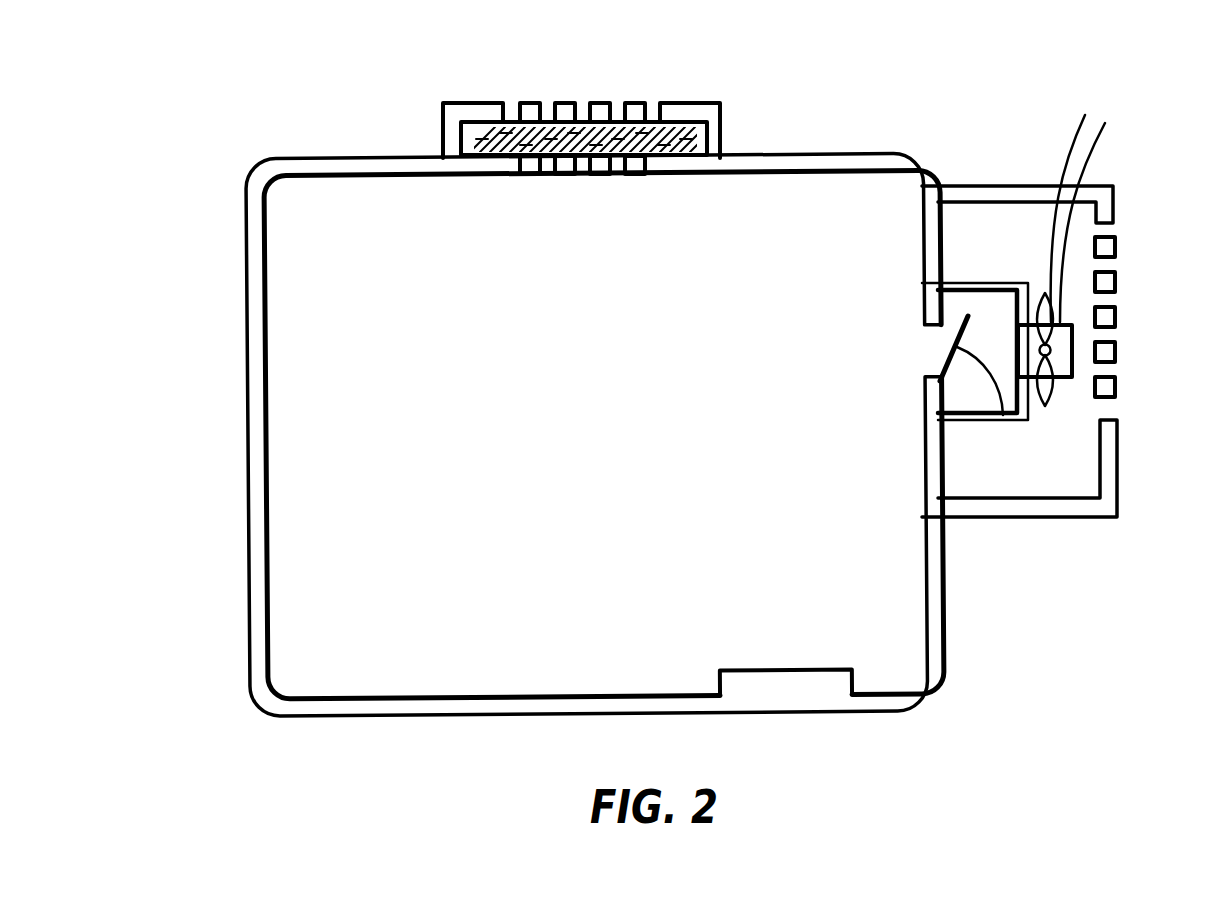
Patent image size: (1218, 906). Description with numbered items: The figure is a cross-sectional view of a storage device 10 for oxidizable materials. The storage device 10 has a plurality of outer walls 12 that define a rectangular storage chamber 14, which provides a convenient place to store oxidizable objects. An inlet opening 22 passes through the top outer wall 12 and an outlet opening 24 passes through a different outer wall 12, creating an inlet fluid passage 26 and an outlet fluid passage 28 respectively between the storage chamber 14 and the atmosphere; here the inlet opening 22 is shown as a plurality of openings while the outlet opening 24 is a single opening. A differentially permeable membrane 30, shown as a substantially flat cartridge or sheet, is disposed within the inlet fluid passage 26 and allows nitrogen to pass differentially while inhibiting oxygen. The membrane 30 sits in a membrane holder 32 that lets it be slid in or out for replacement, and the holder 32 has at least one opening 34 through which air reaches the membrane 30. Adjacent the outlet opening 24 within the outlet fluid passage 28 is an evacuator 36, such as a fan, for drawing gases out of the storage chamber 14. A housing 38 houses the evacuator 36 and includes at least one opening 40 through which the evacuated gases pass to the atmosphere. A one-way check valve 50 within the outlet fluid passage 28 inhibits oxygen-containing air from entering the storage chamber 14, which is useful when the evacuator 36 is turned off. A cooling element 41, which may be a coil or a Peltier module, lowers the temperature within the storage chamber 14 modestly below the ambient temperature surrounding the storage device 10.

The storage device 10 is at (230, 218).
The outer walls 12 is at (260, 406).
The storage chamber 14 is at (318, 563).
The inlet opening 22 is at (548, 172).
The outlet opening 24 is at (930, 377).
The inlet fluid passage 26 is at (587, 172).
The outlet fluid passage 28 is at (935, 347).
The differentially permeable membrane 30 is at (705, 133).
The membrane holder 32 is at (689, 104).
The opening 34 is at (517, 103).
The evacuator 36 is at (1066, 362).
The housing 38 is at (1110, 492).
The opening 40 is at (1112, 265).
The cooling element 41 is at (818, 702).
The one-way check valve 50 is at (1003, 415).